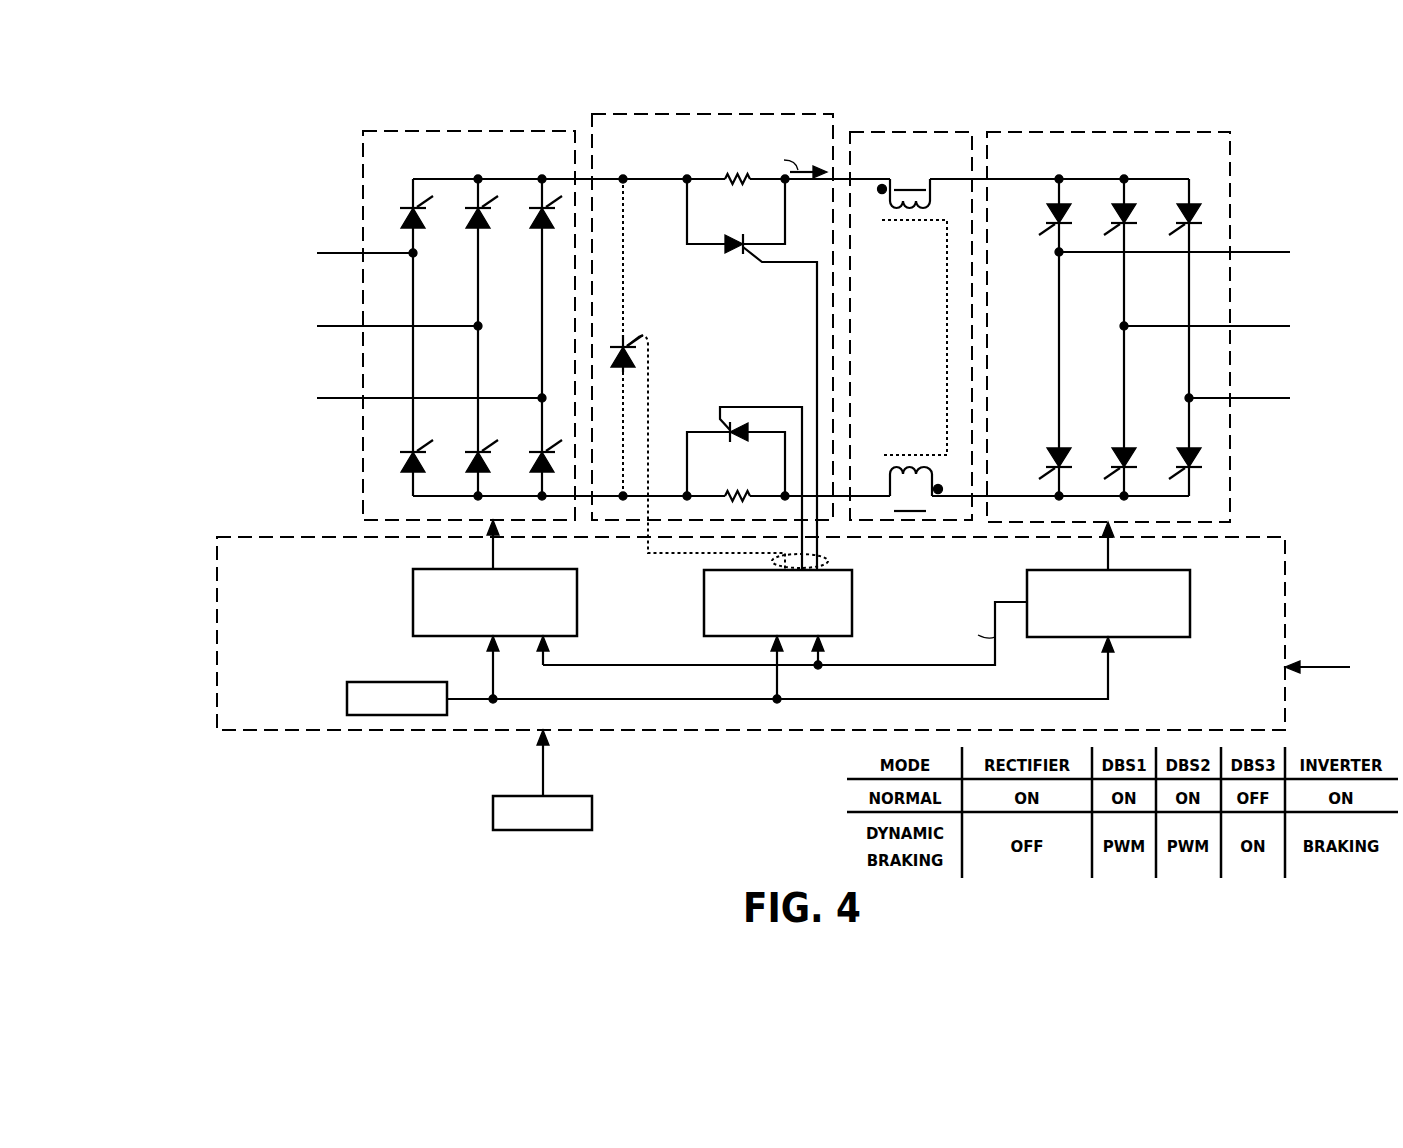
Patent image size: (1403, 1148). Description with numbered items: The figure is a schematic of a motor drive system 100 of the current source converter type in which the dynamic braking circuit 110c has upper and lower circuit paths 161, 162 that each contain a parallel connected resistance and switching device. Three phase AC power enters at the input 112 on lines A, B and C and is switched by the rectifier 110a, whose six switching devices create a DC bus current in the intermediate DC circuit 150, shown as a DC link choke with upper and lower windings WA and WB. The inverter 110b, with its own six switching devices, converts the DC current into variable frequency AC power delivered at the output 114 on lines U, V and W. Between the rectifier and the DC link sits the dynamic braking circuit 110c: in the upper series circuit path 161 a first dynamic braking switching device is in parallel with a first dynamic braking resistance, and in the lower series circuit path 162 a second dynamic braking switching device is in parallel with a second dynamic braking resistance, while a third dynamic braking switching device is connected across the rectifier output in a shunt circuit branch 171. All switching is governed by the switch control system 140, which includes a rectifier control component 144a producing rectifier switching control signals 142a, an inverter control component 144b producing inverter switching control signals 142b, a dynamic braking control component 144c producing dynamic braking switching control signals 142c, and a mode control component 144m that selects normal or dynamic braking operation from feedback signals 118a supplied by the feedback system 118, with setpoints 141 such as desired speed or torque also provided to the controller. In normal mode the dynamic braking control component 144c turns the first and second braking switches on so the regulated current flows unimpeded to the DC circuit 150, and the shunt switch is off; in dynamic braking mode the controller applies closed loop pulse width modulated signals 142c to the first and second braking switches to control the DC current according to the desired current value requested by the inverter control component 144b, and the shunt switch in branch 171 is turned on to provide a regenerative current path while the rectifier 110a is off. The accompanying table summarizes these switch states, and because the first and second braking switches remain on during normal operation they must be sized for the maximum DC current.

The system 100 is at (280, 102).
The rectifier 110a is at (362, 131).
The inverter 110b is at (1232, 150).
The dynamic braking circuit 110c is at (701, 113).
The input 112 is at (315, 212).
The output 114 is at (1287, 211).
The feedback system 118 is at (492, 815).
The feedback signals 118a is at (542, 772).
The switch control system 140 is at (276, 536).
The setpoints 141 is at (1321, 664).
The rectifier switching control signals 142a is at (492, 553).
The inverter switching control signals 142b is at (1107, 555).
The dynamic braking switching control signals 142c is at (830, 564).
The rectifier control component 144a is at (412, 601).
The inverter control component 144b is at (1191, 603).
The dynamic braking control component 144c is at (703, 601).
The mode control component 144m is at (346, 700).
The intermediate DC circuit 150 is at (935, 130).
The upper circuit path 161 is at (674, 179).
The lower circuit path 162 is at (672, 496).
The shunt circuit branch 171 is at (626, 272).